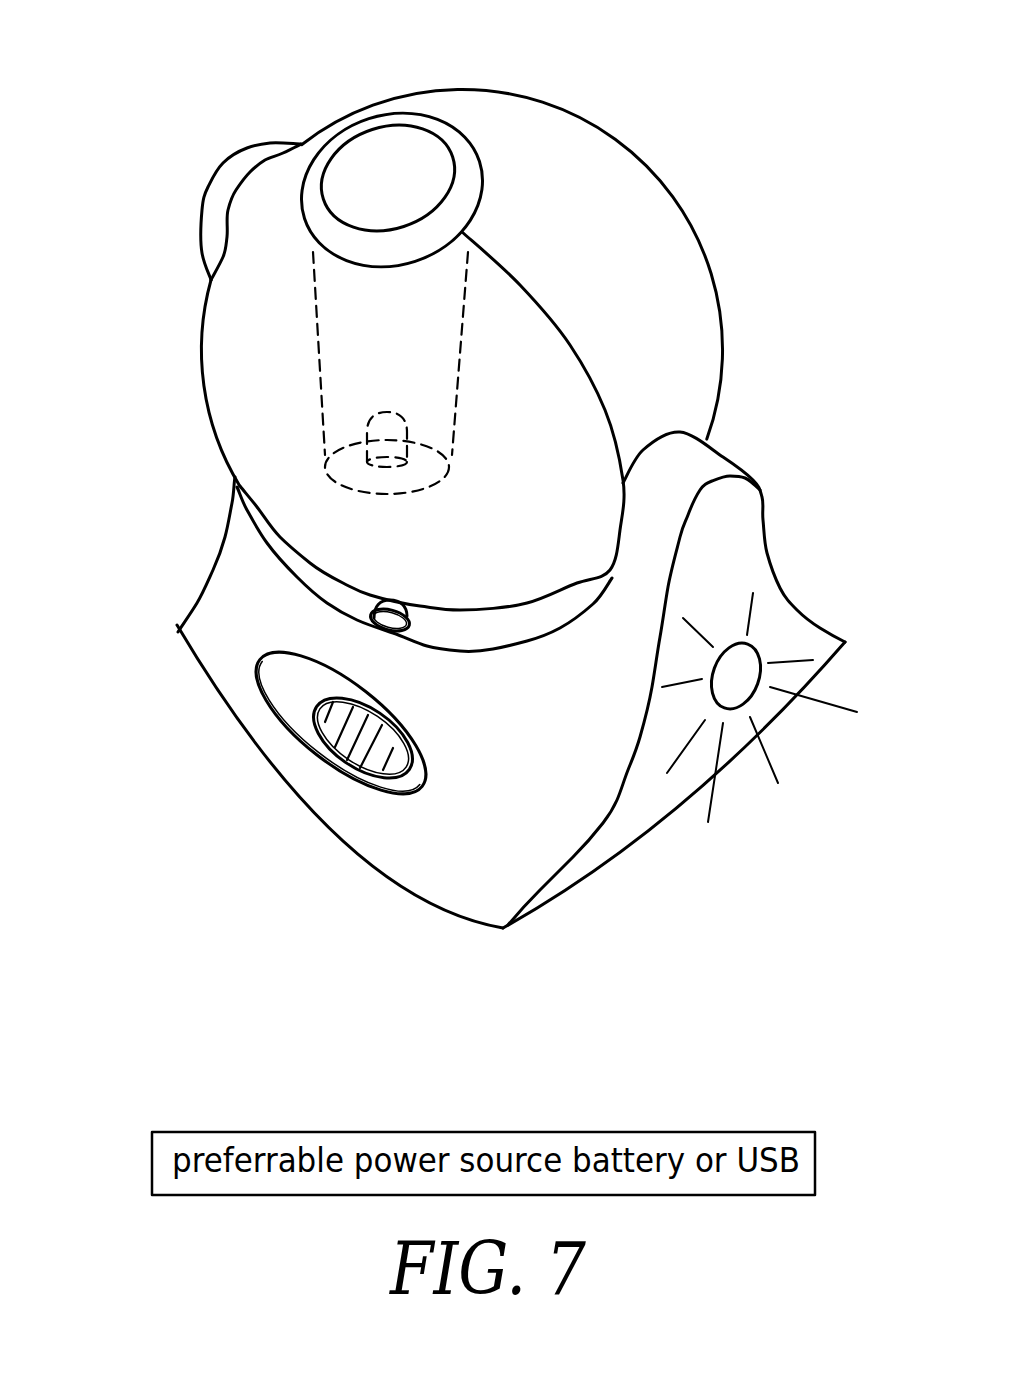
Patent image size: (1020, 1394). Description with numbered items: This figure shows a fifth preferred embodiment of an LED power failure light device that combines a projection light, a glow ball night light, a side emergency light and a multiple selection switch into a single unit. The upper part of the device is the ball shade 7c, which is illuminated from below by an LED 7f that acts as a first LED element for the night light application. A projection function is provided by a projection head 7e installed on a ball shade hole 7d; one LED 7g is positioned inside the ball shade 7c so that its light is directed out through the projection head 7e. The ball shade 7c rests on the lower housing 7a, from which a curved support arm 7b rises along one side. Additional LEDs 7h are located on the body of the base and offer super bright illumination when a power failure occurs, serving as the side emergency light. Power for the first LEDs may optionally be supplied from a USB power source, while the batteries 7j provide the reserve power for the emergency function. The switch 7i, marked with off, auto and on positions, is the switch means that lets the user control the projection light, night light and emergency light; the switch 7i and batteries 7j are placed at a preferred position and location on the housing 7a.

The base housing 7a is at (212, 570).
The support arm 7b is at (702, 473).
The ball shade 7c is at (625, 253).
The ball shade hole 7d is at (477, 153).
The projection head 7e is at (408, 180).
The LED 7f is at (393, 613).
The LED 7g is at (390, 443).
The additional LEDs 7h is at (733, 682).
The switch 7i is at (330, 722).
The batteries 7j is at (353, 855).